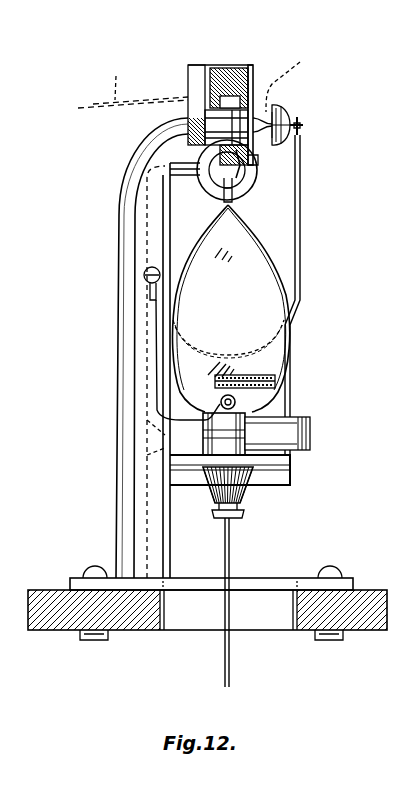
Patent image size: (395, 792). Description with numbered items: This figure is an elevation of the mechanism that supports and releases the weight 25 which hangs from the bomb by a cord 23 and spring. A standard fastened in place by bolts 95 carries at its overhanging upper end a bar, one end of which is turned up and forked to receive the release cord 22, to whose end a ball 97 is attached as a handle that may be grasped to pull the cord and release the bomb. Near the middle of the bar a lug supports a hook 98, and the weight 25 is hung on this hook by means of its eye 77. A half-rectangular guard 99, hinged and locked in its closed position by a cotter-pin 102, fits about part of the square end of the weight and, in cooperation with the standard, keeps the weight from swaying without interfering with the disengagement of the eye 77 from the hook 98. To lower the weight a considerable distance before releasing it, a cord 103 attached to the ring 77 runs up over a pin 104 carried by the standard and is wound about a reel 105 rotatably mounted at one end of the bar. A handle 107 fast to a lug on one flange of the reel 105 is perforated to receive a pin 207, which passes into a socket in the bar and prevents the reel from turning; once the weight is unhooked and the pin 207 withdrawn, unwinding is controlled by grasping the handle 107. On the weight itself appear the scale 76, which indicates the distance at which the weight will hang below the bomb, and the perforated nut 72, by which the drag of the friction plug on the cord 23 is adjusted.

The cord 22 is at (133, 81).
The cord 23 is at (230, 670).
The weight 25 is at (242, 276).
The perforated nut 72 is at (236, 516).
The scale 76 is at (262, 376).
The eye 77 is at (224, 199).
The bolts 95 is at (95, 578).
The ball 97 is at (293, 77).
The hook 98 is at (246, 178).
The half-rectangular guard 99 is at (310, 435).
The cotter-pin 102 is at (236, 402).
The cord 103 is at (230, 68).
The pin 104 is at (178, 183).
The reel 105 is at (251, 66).
The handle 107 is at (283, 105).
The pin 207 is at (303, 125).